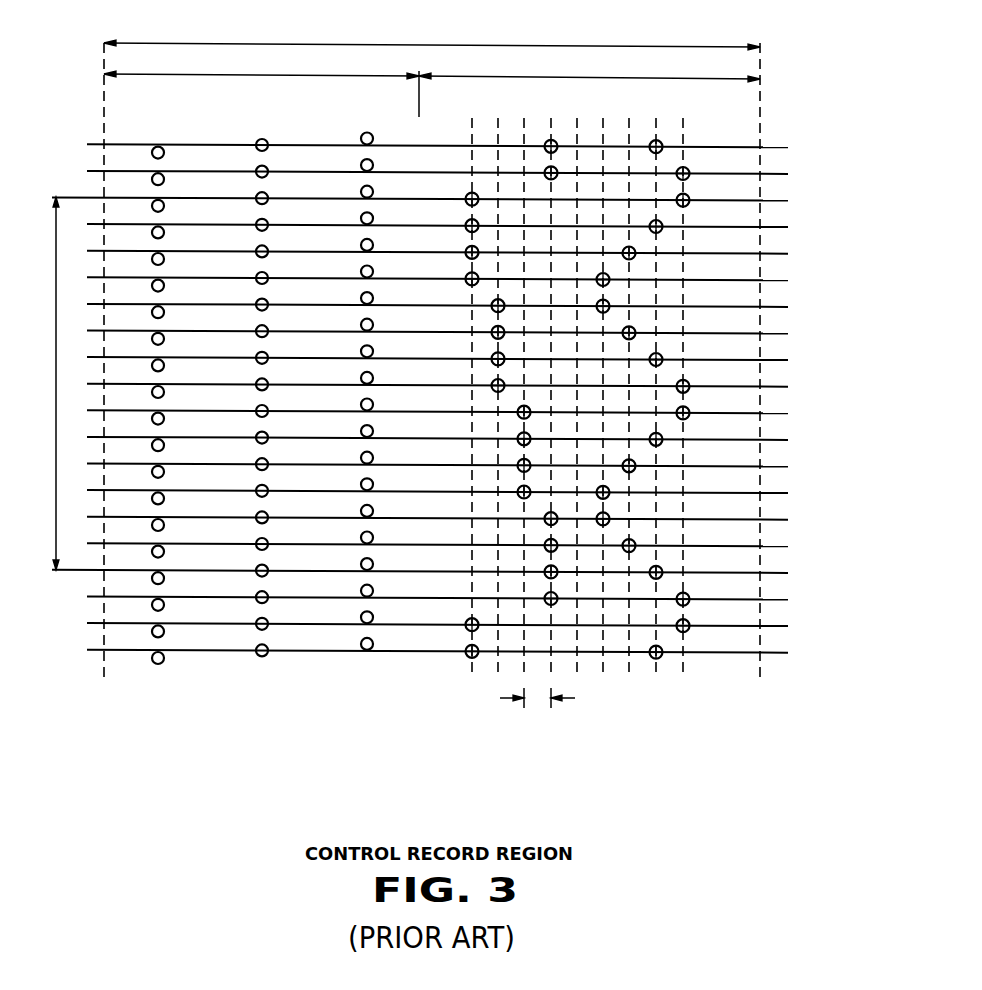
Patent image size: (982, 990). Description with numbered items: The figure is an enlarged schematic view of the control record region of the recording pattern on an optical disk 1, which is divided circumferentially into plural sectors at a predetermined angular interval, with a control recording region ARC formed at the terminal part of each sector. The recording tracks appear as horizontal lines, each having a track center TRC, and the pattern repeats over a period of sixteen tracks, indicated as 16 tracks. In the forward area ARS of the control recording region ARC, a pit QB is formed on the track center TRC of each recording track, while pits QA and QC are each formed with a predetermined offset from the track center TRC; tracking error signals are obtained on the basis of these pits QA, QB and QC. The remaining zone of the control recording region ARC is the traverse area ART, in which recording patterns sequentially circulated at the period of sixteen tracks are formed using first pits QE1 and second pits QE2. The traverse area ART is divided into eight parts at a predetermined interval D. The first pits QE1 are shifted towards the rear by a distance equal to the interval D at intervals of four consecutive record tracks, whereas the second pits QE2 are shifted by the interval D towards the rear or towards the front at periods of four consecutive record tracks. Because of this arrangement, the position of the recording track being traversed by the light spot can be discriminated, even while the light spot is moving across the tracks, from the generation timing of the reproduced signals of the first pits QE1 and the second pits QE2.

The optical disk 1 is at (672, 728).
The track center TRC is at (775, 254).
The 16 tracks 16 is at (45, 383).
The pit QA is at (163, 148).
The pit QB is at (267, 141).
The pit QC is at (373, 136).
The first pits QE1 is at (470, 659).
The second pits QE2 is at (656, 660).
The control recording region ARC is at (432, 349).
The forward area ARS is at (261, 84).
The traverse area ART is at (589, 365).
The interval D is at (537, 698).